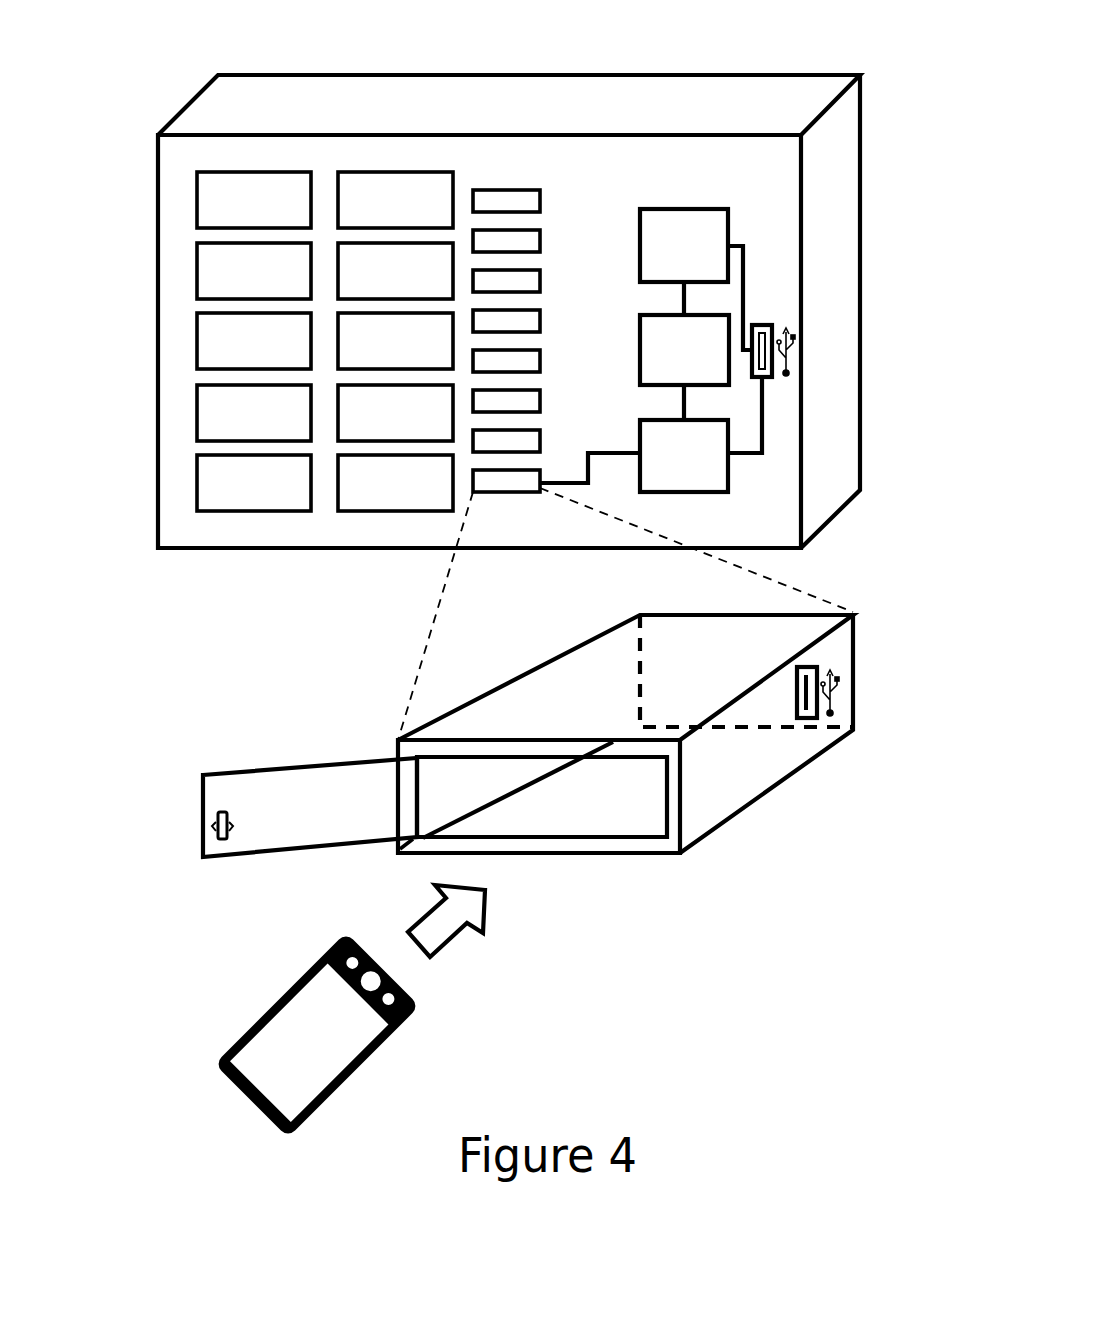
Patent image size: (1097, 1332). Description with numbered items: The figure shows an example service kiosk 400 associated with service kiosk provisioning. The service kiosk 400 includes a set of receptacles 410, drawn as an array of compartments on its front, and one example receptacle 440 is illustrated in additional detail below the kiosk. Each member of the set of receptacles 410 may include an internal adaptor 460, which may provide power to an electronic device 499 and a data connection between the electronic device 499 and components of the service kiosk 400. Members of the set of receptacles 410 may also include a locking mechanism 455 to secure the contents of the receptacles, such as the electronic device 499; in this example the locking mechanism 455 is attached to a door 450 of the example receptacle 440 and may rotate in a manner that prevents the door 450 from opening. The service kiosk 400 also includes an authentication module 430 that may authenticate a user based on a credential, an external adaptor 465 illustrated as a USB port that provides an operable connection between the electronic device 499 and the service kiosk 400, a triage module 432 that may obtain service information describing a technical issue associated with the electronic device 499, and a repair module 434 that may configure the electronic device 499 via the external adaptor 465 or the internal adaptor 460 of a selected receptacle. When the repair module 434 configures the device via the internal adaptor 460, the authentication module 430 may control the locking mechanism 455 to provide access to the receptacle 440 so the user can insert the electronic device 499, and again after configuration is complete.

The service kiosk 400 is at (640, 75).
The set of receptacles 410 is at (142, 172).
The authentication module 430 is at (713, 369).
The triage module 432 is at (713, 265).
The repair module 434 is at (712, 475).
The receptacle 440 is at (611, 853).
The door 450 is at (315, 763).
The locking mechanism 455 is at (218, 828).
The internal adaptor 460 is at (805, 667).
The external adaptor 465 is at (760, 325).
The electronic device 499 is at (418, 1005).